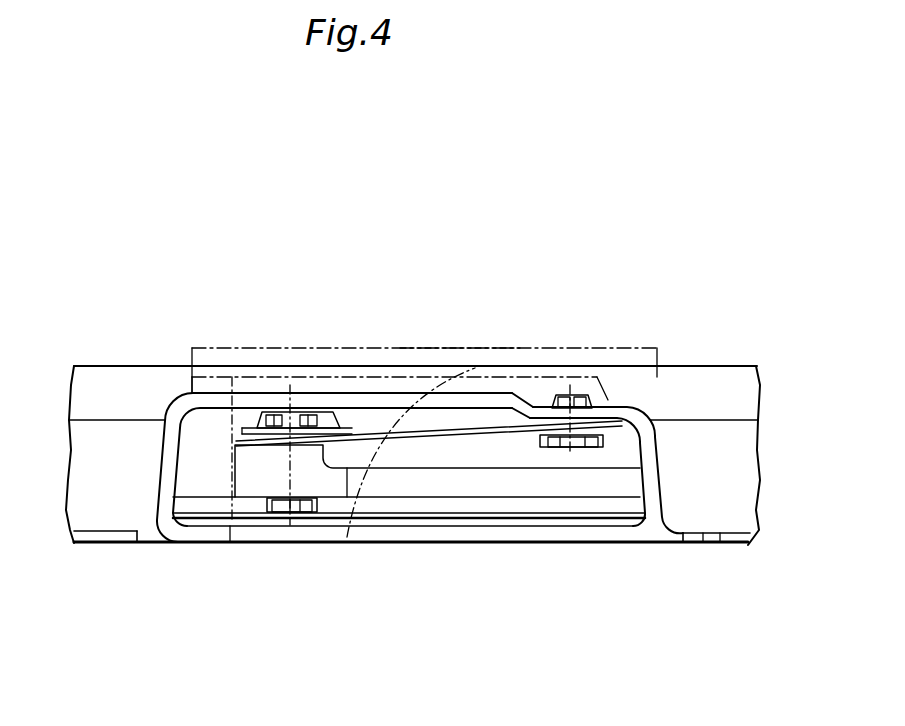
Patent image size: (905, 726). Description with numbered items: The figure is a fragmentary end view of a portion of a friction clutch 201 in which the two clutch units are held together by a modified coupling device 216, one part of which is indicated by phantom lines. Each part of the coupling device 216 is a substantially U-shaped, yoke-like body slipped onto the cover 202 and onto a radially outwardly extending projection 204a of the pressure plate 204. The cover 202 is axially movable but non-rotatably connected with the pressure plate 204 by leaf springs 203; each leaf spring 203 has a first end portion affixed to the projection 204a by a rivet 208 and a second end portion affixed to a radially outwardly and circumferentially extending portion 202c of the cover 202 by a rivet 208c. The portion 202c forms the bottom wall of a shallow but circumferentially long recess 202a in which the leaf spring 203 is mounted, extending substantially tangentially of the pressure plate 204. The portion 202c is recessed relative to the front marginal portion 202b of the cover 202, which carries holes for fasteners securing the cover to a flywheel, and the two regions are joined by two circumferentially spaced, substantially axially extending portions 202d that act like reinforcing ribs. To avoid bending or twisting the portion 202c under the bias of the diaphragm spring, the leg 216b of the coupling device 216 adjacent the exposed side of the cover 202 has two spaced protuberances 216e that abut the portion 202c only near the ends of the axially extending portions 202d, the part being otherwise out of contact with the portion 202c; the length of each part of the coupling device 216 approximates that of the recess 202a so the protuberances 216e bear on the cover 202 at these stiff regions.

The friction clutch 201 is at (708, 305).
The cover 202 is at (120, 393).
The recess 202a is at (553, 483).
The front marginal portion 202b is at (95, 520).
The radially outwardly and circumferentially extending portion 202c is at (380, 405).
The axially extending portions 202d is at (177, 415).
The leaf spring 203 is at (408, 432).
The pressure plate 204 is at (515, 480).
The projection 204a is at (300, 478).
The rivet 208 is at (263, 420).
The rivet 208c is at (548, 447).
The coupling device 216 is at (482, 358).
The leg 216b is at (510, 360).
The protuberances 216e is at (212, 390).